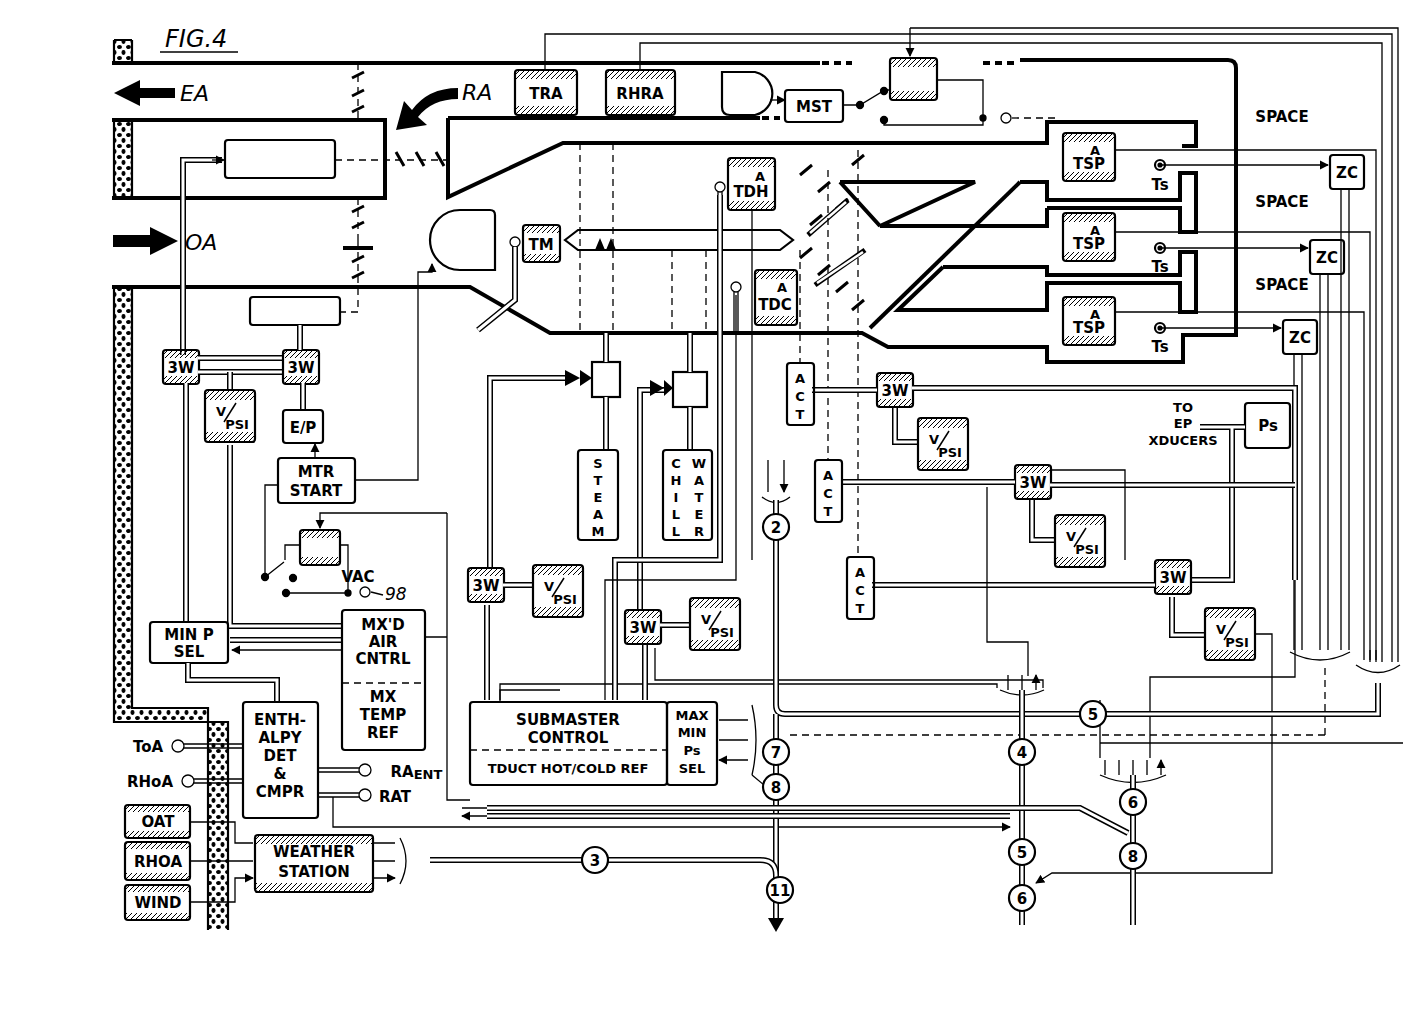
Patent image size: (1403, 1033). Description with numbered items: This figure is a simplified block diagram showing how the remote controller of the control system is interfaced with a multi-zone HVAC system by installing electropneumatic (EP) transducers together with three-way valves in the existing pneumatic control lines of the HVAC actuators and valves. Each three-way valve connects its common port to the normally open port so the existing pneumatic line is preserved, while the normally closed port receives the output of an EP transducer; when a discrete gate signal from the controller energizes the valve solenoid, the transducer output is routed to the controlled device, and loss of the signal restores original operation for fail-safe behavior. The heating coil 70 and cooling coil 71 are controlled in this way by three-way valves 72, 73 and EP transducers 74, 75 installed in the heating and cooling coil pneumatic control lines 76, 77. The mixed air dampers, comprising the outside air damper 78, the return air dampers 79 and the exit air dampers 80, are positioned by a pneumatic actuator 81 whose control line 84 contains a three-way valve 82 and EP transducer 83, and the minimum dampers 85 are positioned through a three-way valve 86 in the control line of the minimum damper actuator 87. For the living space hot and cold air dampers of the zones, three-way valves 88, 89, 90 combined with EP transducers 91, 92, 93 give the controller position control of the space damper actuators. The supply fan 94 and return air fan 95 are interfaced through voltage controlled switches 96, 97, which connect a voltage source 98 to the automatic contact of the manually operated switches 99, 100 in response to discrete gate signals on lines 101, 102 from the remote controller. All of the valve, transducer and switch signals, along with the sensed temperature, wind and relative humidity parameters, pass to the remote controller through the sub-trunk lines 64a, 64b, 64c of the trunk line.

The heating coil 70 is at (612, 152).
The cooling coil 71 is at (672, 262).
The three-way valve 72 is at (490, 568).
The three-way valve 73 is at (645, 610).
The EP transducer 74 is at (550, 565).
The EP transducer 75 is at (730, 598).
The heating coil pneumatic control line 76 is at (497, 440).
The cooling coil pneumatic control line 77 is at (640, 440).
The outside air damper 78 is at (364, 225).
The return air dampers 79 is at (405, 148).
The exit air dampers 80 is at (367, 88).
The pneumatic actuator 81 is at (270, 140).
The three-way valve 82 is at (163, 365).
The EP transducer 83 is at (215, 448).
The control line 84 is at (186, 305).
The minimum dampers 85 is at (364, 262).
The three-way valve 86 is at (318, 368).
The minimum damper actuator 87 is at (340, 315).
The three-way valve 88 is at (905, 373).
The three-way valve 89 is at (1040, 465).
The three-way valve 90 is at (1175, 560).
The EP transducer 91 is at (970, 428).
The EP transducer 92 is at (1098, 515).
The EP transducer 93 is at (1205, 648).
The supply fan 94 is at (470, 212).
The return air fan 95 is at (765, 82).
The voltage controlled switch 96 is at (340, 540).
The voltage controlled switch 97 is at (937, 68).
The voltage source 98 is at (1012, 112).
The manually operated switch 99 is at (290, 530).
The manually operated switch 100 is at (845, 86).
The gate signal line 101 is at (385, 512).
The gate signal line 102 is at (1392, 80).
The sub-trunk line 64a is at (786, 872).
The sub-trunk line 64b is at (1013, 885).
The sub-trunk line 64c is at (1140, 898).